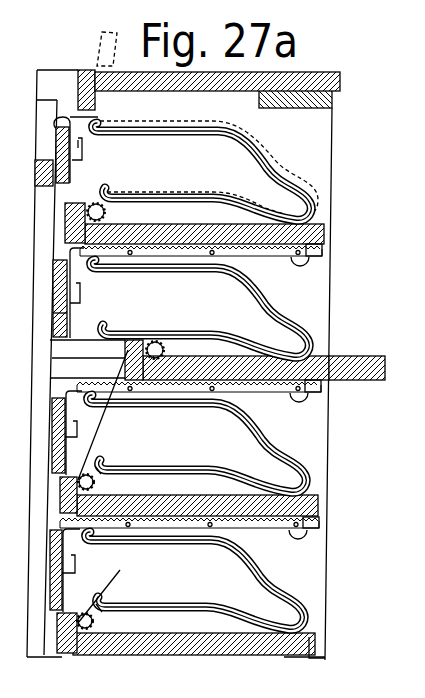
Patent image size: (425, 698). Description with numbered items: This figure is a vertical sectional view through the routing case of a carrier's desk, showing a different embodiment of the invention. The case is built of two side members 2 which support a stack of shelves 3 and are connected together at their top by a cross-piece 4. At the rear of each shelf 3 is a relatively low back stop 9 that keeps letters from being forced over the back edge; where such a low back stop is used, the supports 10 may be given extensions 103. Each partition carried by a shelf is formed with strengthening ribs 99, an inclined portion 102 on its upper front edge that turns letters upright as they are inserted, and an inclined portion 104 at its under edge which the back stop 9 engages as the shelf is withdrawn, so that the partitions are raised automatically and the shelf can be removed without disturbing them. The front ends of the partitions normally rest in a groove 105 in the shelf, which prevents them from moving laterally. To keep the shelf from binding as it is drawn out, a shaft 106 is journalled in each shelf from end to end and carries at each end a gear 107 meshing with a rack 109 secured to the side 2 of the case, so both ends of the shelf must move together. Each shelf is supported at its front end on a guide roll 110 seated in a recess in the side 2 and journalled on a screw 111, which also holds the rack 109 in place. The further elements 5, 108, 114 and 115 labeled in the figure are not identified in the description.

The side member 2 is at (314, 454).
The shelf 3 is at (322, 232).
The cross-piece 4 is at (272, 75).
The flexible tube loop 5 is at (226, 375).
The back stop 9 is at (82, 470).
The support 10 is at (73, 296).
The strengthening rib 99 is at (243, 161).
The inclined portion 102 is at (261, 302).
The extension 103 is at (77, 188).
The inclined portion 104 is at (252, 205).
The groove 105 is at (312, 226).
The shaft 106 is at (82, 255).
The gear 107 is at (108, 220).
The pad 108 is at (92, 482).
The rack 109 is at (322, 252).
The guide roll 110 is at (291, 267).
The screw 111 is at (310, 404).
The pin 114 is at (102, 148).
The stop block 115 is at (77, 181).